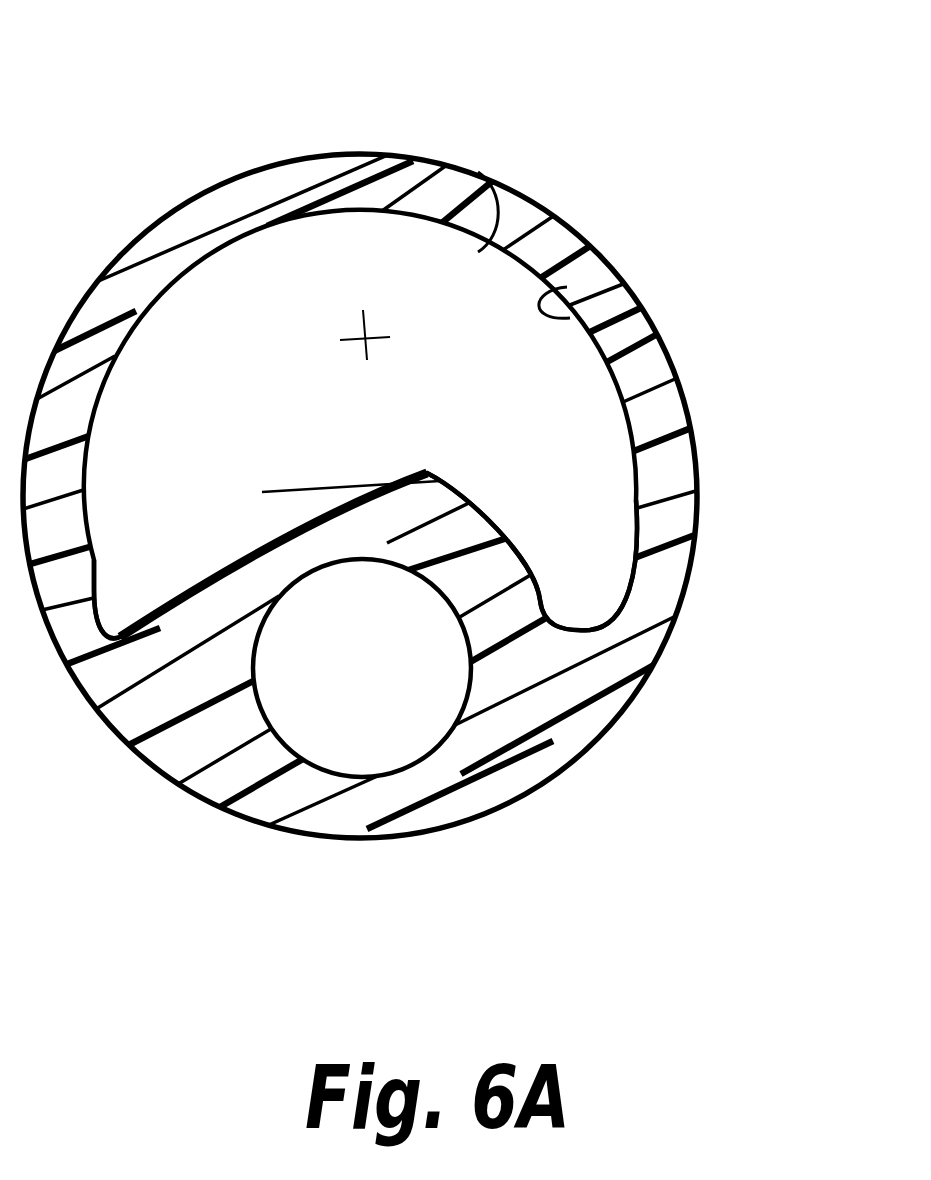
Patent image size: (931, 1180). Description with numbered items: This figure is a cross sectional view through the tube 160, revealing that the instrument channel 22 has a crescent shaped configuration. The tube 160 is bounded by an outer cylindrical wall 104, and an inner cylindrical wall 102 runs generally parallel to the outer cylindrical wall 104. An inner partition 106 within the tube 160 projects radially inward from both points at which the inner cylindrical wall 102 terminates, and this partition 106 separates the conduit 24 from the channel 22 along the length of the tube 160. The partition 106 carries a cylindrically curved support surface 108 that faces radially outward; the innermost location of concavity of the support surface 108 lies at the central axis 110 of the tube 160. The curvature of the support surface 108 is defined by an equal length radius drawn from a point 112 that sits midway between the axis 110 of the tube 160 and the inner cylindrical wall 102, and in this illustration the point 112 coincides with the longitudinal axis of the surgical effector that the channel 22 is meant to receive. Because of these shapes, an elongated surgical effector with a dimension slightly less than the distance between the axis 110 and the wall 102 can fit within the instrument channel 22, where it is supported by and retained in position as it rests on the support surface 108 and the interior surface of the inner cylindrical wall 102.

The tube 160 is at (212, 186).
The channel 22 is at (490, 185).
The inner cylindrical wall 102 is at (460, 280).
The outer cylindrical wall 104 is at (657, 330).
The inner partition 106 is at (238, 541).
The support surface 108 is at (300, 488).
The central axis 110 is at (357, 497).
The point 112 is at (358, 334).
The conduit 24 is at (368, 700).